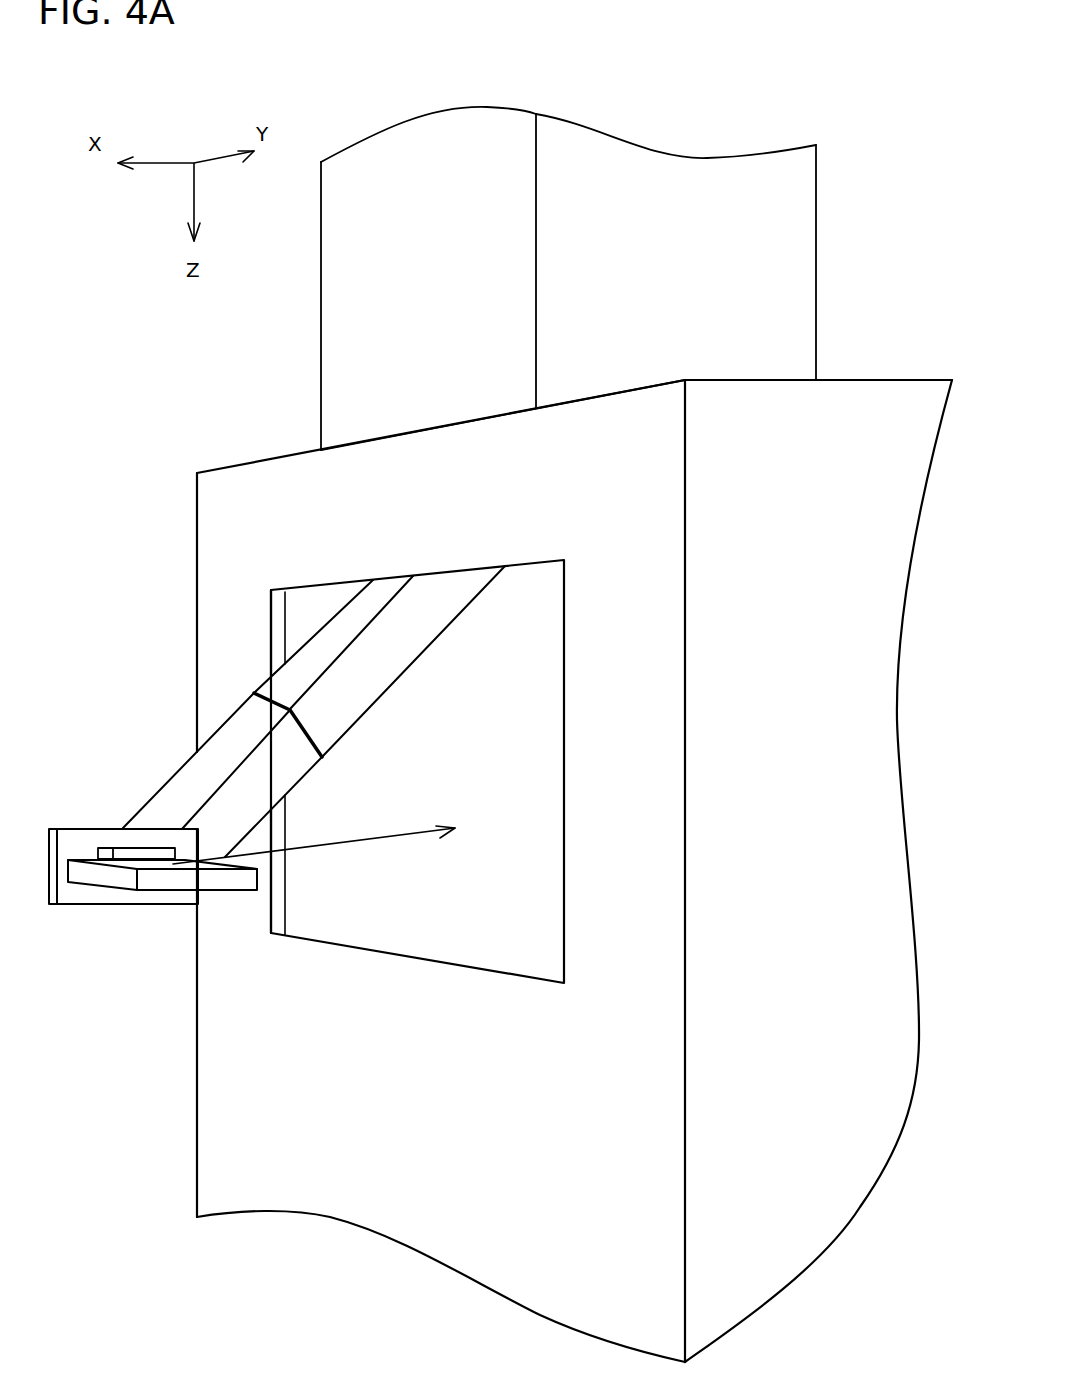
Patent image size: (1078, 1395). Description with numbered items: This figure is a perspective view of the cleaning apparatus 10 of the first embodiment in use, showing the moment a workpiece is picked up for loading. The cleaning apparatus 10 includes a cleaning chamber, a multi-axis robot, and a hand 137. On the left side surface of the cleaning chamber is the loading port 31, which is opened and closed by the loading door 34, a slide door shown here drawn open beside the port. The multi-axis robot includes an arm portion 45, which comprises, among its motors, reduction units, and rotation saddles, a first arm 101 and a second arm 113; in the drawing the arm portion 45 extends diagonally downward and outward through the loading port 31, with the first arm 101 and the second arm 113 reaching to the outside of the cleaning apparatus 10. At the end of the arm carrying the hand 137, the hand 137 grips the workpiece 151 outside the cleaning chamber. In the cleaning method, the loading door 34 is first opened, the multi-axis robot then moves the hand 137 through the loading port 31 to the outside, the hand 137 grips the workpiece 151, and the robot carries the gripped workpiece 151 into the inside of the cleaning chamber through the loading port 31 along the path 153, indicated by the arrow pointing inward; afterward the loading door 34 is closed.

The cleaning apparatus 10 is at (955, 62).
The loading port 31 is at (564, 797).
The loading door 34 is at (285, 617).
The arm portion 45 is at (416, 685).
The first arm 101 is at (338, 744).
The second arm 113 is at (173, 773).
The hand 137 is at (95, 829).
The workpiece 151 is at (217, 892).
The path 153 is at (313, 847).